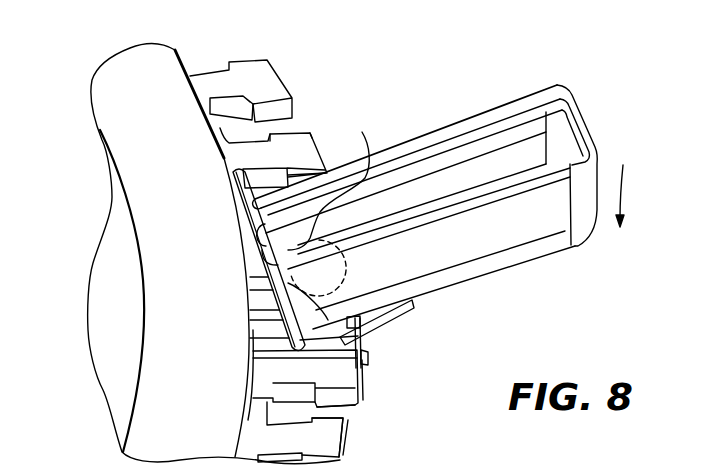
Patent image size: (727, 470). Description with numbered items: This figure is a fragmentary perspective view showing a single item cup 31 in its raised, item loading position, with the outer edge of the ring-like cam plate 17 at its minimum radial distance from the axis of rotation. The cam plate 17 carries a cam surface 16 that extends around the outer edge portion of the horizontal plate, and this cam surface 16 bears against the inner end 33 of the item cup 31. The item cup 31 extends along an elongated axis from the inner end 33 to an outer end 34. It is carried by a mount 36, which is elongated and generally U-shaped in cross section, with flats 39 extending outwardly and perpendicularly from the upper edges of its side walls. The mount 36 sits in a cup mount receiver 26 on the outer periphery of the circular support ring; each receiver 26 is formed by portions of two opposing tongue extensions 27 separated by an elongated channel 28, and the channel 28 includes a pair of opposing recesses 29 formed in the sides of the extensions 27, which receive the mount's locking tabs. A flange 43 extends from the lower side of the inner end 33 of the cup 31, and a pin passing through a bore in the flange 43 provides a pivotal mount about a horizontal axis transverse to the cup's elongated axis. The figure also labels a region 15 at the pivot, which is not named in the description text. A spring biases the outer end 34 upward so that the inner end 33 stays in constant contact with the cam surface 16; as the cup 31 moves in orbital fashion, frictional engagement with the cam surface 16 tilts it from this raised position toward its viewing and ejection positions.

The pivot boss 15 is at (362, 132).
The cam surface 16 is at (193, 90).
The cam plate 17 is at (117, 83).
The cup mount receiver 26 is at (288, 64).
The tongue extension 27 is at (333, 447).
The elongated channel 28 is at (306, 115).
The recess 29 is at (232, 97).
The item cup 31 is at (495, 292).
The inner end 33 is at (262, 310).
The outer end 34 is at (583, 123).
The mount 36 is at (392, 332).
The flat 39 is at (364, 350).
The flange 43 is at (278, 300).